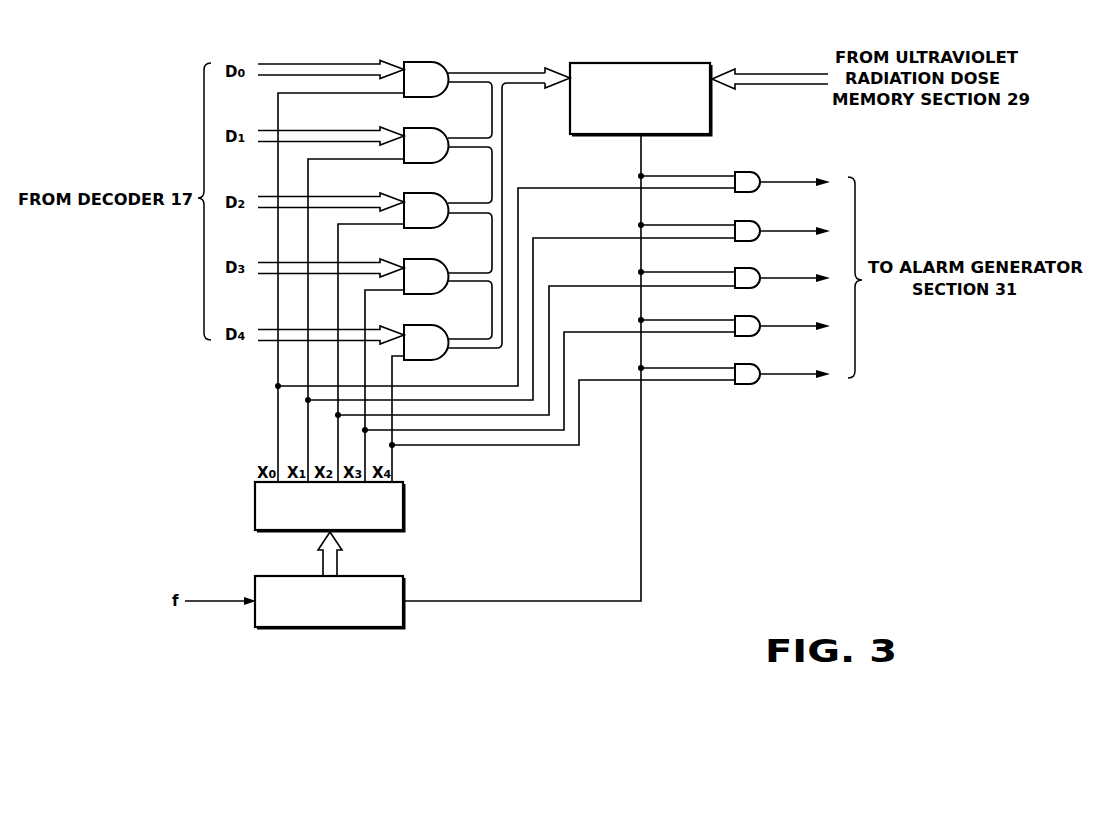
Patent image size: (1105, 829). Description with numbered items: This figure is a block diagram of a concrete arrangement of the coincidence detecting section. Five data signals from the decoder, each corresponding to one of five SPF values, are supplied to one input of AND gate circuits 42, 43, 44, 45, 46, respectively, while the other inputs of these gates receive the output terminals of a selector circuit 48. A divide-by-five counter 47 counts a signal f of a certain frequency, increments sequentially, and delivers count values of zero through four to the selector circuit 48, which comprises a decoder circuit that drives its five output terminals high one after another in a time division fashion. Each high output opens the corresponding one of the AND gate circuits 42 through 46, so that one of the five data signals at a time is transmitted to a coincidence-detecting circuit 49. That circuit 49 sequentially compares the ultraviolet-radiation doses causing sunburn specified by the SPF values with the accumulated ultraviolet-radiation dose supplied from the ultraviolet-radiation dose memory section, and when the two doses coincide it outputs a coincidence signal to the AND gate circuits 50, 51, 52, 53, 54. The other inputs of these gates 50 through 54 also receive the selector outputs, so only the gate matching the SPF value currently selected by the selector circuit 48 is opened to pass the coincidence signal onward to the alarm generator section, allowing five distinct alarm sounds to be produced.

The AND gate circuit 42 is at (441, 63).
The AND gate circuit 43 is at (441, 129).
The AND gate circuit 44 is at (441, 194).
The AND gate circuit 45 is at (441, 260).
The AND gate circuit 46 is at (441, 326).
The divided-by-5 counter 47 is at (404, 588).
The selector circuit 48 is at (404, 505).
The coincidence-detecting circuit 49 is at (638, 62).
The AND gate circuit 50 is at (755, 173).
The AND gate circuit 51 is at (755, 222).
The AND gate circuit 52 is at (755, 269).
The AND gate circuit 53 is at (755, 317).
The AND gate circuit 54 is at (755, 365).